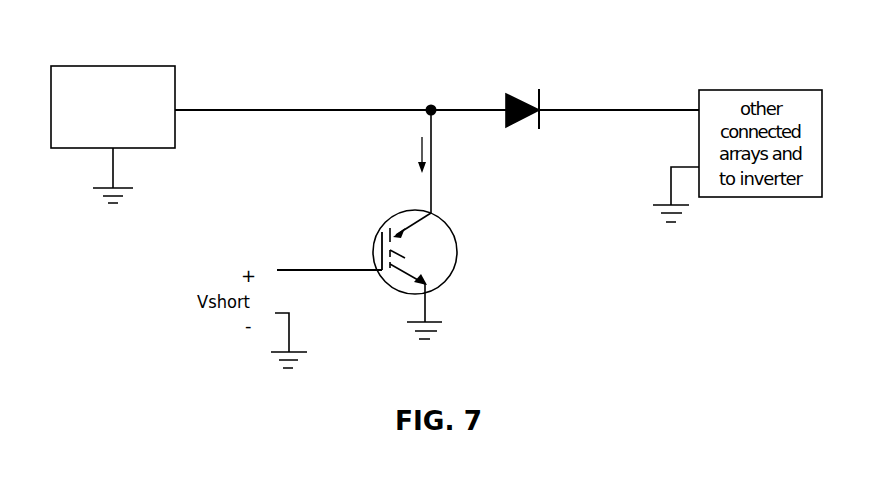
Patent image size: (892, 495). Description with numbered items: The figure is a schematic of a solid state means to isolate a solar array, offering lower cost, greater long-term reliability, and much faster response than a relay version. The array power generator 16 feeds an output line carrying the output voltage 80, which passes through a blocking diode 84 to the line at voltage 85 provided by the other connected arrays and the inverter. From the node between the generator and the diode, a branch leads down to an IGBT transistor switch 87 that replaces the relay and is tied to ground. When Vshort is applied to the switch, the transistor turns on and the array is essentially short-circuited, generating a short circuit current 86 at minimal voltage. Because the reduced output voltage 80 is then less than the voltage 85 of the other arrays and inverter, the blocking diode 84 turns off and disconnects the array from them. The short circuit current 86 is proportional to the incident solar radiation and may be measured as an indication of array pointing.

The array power generator 16 is at (103, 64).
The reduced output voltage 80 is at (212, 106).
The blocking diode 84 is at (523, 88).
The voltage provided by the other arrays and inverter 85 is at (632, 110).
The short circuit current 86 is at (390, 170).
The IGBT transistor switch 87 is at (387, 288).